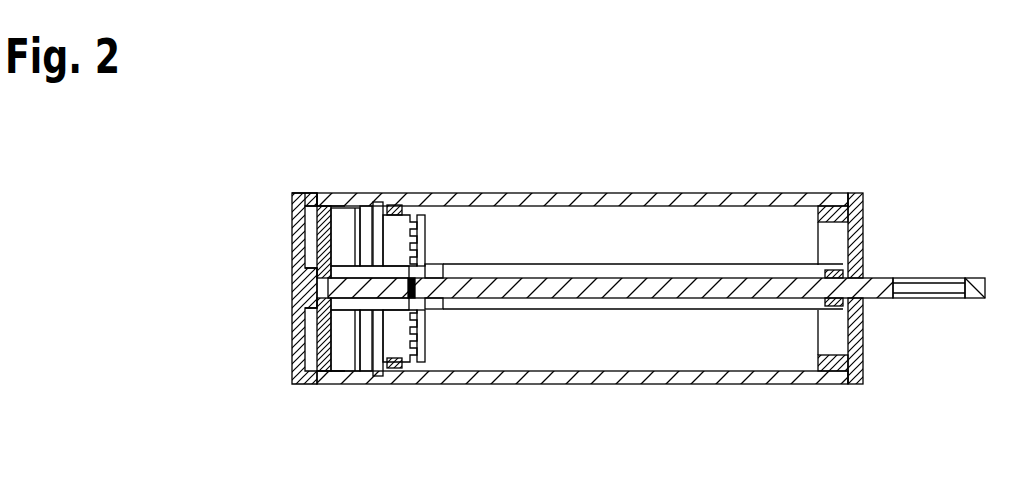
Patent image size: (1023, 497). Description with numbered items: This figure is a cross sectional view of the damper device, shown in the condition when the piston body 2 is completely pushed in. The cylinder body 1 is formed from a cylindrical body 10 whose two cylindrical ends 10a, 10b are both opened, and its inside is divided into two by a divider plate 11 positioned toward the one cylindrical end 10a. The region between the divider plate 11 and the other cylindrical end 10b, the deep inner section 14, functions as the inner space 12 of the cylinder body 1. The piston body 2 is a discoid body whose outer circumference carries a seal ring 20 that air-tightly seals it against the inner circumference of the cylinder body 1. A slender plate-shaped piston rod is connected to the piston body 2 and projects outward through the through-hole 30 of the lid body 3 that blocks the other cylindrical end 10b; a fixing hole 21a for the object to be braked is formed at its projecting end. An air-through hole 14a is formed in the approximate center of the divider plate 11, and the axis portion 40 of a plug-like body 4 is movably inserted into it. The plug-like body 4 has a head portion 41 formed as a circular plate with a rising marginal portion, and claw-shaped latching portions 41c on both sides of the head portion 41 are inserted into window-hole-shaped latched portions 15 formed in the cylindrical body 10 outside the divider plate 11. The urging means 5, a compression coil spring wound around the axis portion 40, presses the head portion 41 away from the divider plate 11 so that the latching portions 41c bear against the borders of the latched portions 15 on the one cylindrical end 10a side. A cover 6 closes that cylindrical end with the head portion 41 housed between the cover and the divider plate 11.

The cylinder body 1 is at (582, 195).
The piston body 2 is at (443, 193).
The lid body 3 is at (863, 237).
The plug-like body 4 is at (292, 253).
The urging means 5 is at (353, 193).
The cover 6 is at (292, 215).
The cylindrical body 10 is at (683, 195).
The one cylindrical end 10a is at (307, 193).
The other cylindrical end 10b is at (853, 197).
The divider plate 11 is at (367, 383).
The inner space 12 is at (630, 252).
The deep inner section 14 is at (367, 383).
The air-through hole 14a is at (385, 200).
The latched portions 15 is at (340, 193).
The seal ring 20 is at (410, 383).
The fixing hole 21a is at (932, 290).
The through-hole 30 is at (863, 333).
The axis portion 40 is at (292, 287).
The head portion 41 is at (318, 335).
The latching portions 41c is at (325, 193).